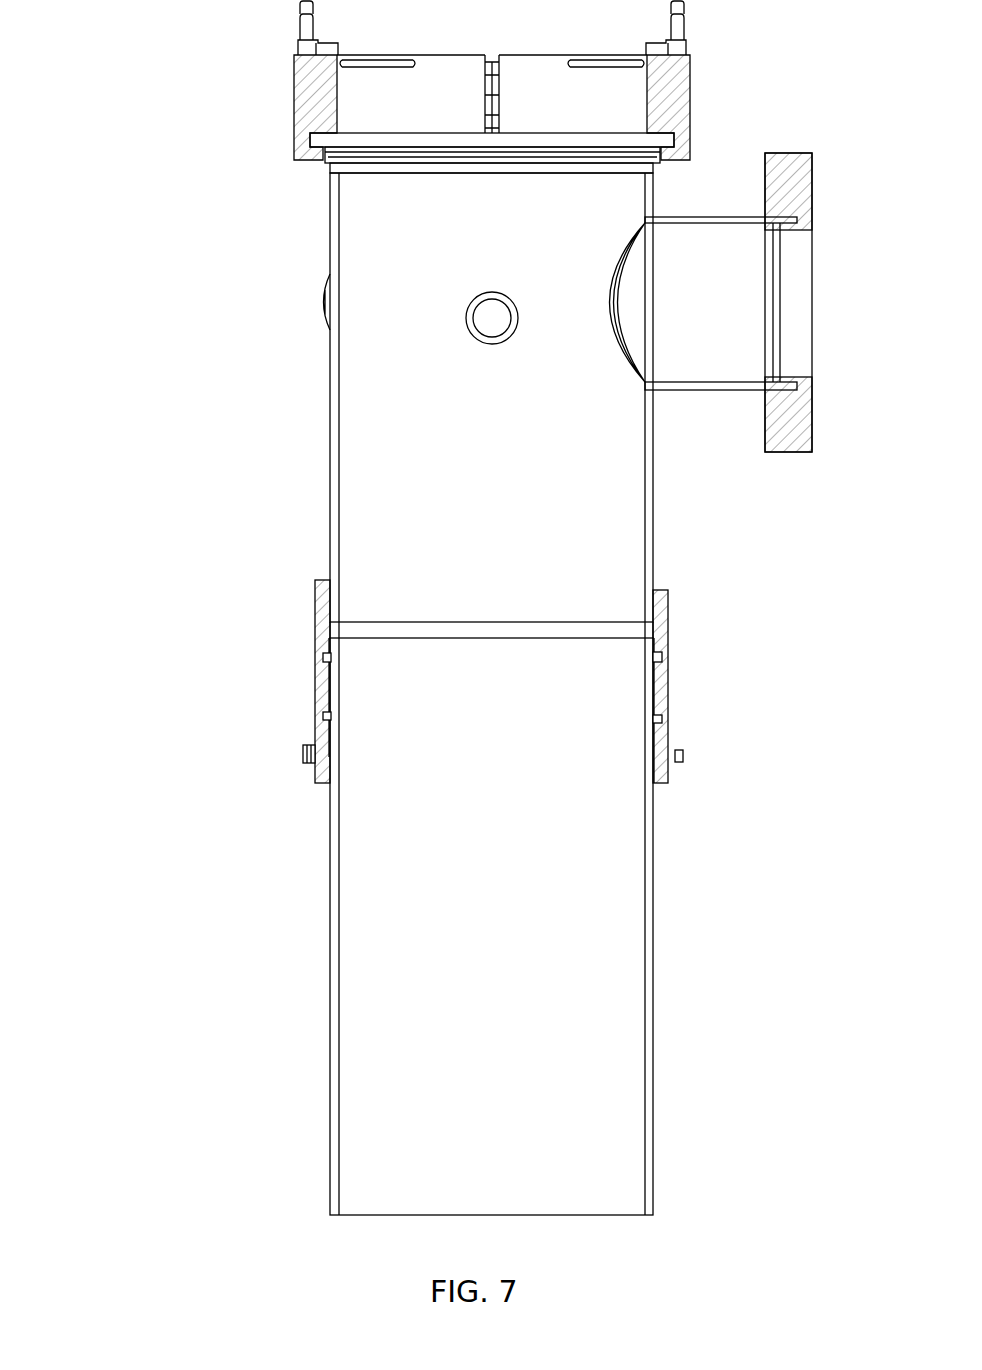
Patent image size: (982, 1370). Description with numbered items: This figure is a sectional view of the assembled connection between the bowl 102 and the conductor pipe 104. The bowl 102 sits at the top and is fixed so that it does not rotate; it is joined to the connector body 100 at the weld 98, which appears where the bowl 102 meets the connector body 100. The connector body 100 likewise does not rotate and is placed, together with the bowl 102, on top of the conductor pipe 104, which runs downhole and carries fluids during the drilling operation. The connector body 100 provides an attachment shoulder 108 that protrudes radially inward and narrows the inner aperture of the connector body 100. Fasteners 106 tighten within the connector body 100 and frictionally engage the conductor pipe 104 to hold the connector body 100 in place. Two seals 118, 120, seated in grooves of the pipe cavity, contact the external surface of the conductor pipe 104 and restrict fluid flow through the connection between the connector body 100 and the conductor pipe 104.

The weld 98 is at (655, 585).
The connector body 100 is at (665, 627).
The bowl 102 is at (333, 435).
The conductor pipe 104 is at (655, 937).
The fasteners 106 is at (300, 757).
The attachment shoulder 108 is at (332, 632).
The seal 118 is at (327, 653).
The seal 120 is at (323, 717).